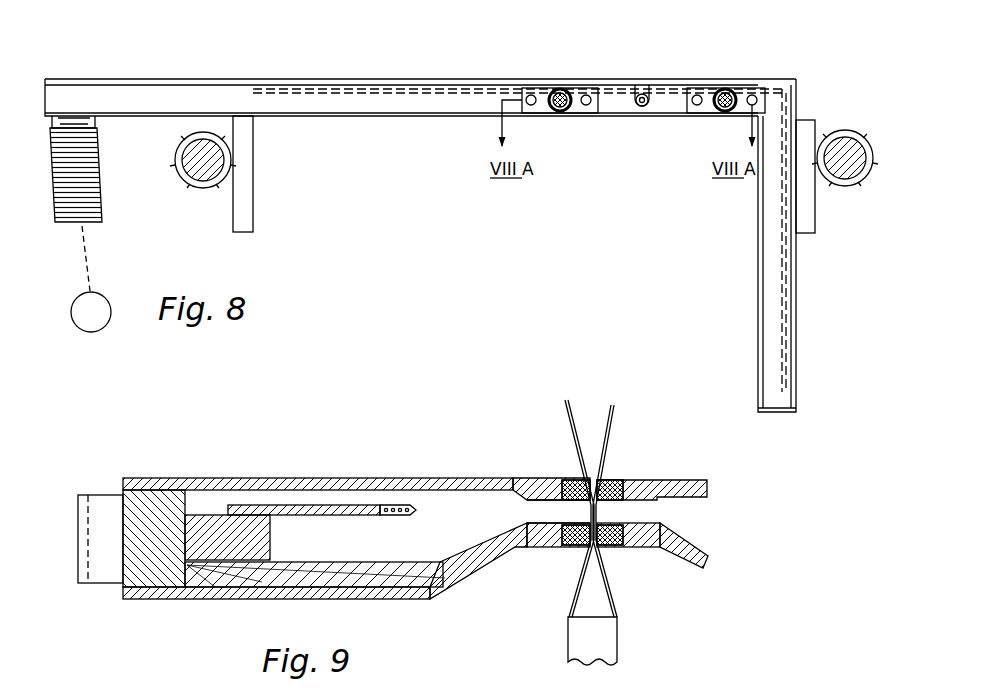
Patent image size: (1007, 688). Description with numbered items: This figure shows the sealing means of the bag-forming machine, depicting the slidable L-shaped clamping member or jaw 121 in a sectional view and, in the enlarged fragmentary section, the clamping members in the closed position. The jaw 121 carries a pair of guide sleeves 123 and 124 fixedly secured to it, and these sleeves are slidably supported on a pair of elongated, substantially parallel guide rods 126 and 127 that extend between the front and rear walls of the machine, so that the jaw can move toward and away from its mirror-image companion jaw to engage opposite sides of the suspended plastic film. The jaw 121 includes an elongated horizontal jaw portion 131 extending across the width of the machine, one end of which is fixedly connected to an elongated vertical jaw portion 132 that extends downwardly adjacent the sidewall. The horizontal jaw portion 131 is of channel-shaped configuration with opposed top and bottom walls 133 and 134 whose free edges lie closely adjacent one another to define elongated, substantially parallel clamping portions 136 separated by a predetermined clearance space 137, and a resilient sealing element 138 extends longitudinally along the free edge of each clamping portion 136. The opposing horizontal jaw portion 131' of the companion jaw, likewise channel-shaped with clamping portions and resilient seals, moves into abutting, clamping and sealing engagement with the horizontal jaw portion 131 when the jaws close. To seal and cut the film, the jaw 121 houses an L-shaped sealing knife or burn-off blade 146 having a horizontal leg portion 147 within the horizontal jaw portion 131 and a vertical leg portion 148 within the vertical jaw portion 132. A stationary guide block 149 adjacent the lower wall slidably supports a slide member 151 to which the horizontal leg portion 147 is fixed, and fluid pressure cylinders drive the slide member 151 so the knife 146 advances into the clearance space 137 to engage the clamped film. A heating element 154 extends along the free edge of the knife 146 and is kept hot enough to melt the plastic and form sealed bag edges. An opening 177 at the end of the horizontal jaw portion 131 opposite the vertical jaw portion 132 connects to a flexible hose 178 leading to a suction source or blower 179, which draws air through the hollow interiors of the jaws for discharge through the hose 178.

In FIG. 8, the slidable L-shaped clamping member or jaw 121 is at (532, 68).
In FIG. 8, the guide sleeve 123 is at (190, 182).
In FIG. 8, the guide sleeve 124 is at (838, 131).
In FIG. 8, the guide rod 126 is at (216, 166).
In FIG. 8, the guide rod 127 is at (847, 166).
In FIG. 8, the horizontal jaw portion 131 is at (420, 121).
In FIG. 9, the horizontal jaw portion 131 is at (325, 523).
In FIG. 9, the horizontal jaw portion 131' is at (652, 465).
In FIG. 8, the vertical jaw portion 132 is at (755, 262).
In FIG. 9, the top wall 133 is at (453, 478).
In FIG. 9, the bottom wall 134 is at (384, 592).
In FIG. 9, the clamping portion 136 is at (527, 496).
In FIG. 9, the clearance space 137 is at (540, 513).
In FIG. 9, the resilient sealing element 138 is at (568, 480).
In FIG. 8, the sealing knife or burn-off blade 146 is at (465, 96).
In FIG. 8, the horizontal leg portion 147 is at (387, 90).
In FIG. 9, the horizontal leg portion 147 is at (284, 505).
In FIG. 8, the vertical leg portion 148 is at (783, 283).
In FIG. 9, the stationary guide block 149 is at (281, 574).
In FIG. 9, the slide member 151 is at (226, 554).
In FIG. 9, the heating element 154 is at (397, 516).
In FIG. 8, the opening 177 is at (86, 126).
In FIG. 8, the flexible hose 178 is at (76, 162).
In FIG. 8, the suction source or blower 179 is at (106, 301).